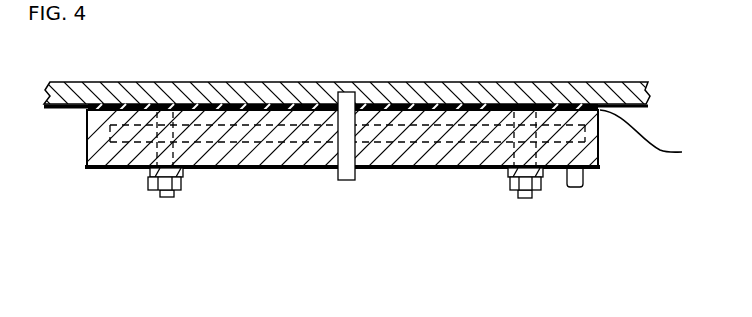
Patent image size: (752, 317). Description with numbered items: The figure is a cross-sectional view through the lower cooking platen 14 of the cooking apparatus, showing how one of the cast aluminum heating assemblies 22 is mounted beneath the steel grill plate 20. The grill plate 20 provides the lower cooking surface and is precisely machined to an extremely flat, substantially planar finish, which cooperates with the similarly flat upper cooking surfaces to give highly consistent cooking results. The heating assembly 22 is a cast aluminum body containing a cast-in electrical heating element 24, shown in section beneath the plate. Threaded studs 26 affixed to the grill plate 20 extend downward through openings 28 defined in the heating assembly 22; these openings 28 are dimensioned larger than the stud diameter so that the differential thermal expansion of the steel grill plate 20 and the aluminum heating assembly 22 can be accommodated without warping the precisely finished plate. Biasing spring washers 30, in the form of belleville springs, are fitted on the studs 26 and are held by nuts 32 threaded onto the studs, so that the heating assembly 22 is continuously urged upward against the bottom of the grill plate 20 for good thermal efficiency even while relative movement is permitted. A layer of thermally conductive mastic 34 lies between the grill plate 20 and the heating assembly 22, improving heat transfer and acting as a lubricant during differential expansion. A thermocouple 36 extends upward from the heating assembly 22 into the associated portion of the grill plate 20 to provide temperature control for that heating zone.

The lower cooking platen 14 is at (373, 161).
The grill plate 20 is at (313, 92).
The heating assembly 22 is at (385, 158).
The electrical heating element 24 is at (282, 150).
The threaded stud 26 is at (330, 203).
The opening 28 is at (208, 170).
The biasing spring washer 30 is at (150, 172).
The nut 32 is at (181, 190).
The thermally conductive mastic 34 is at (659, 136).
The thermocouple 36 is at (355, 180).